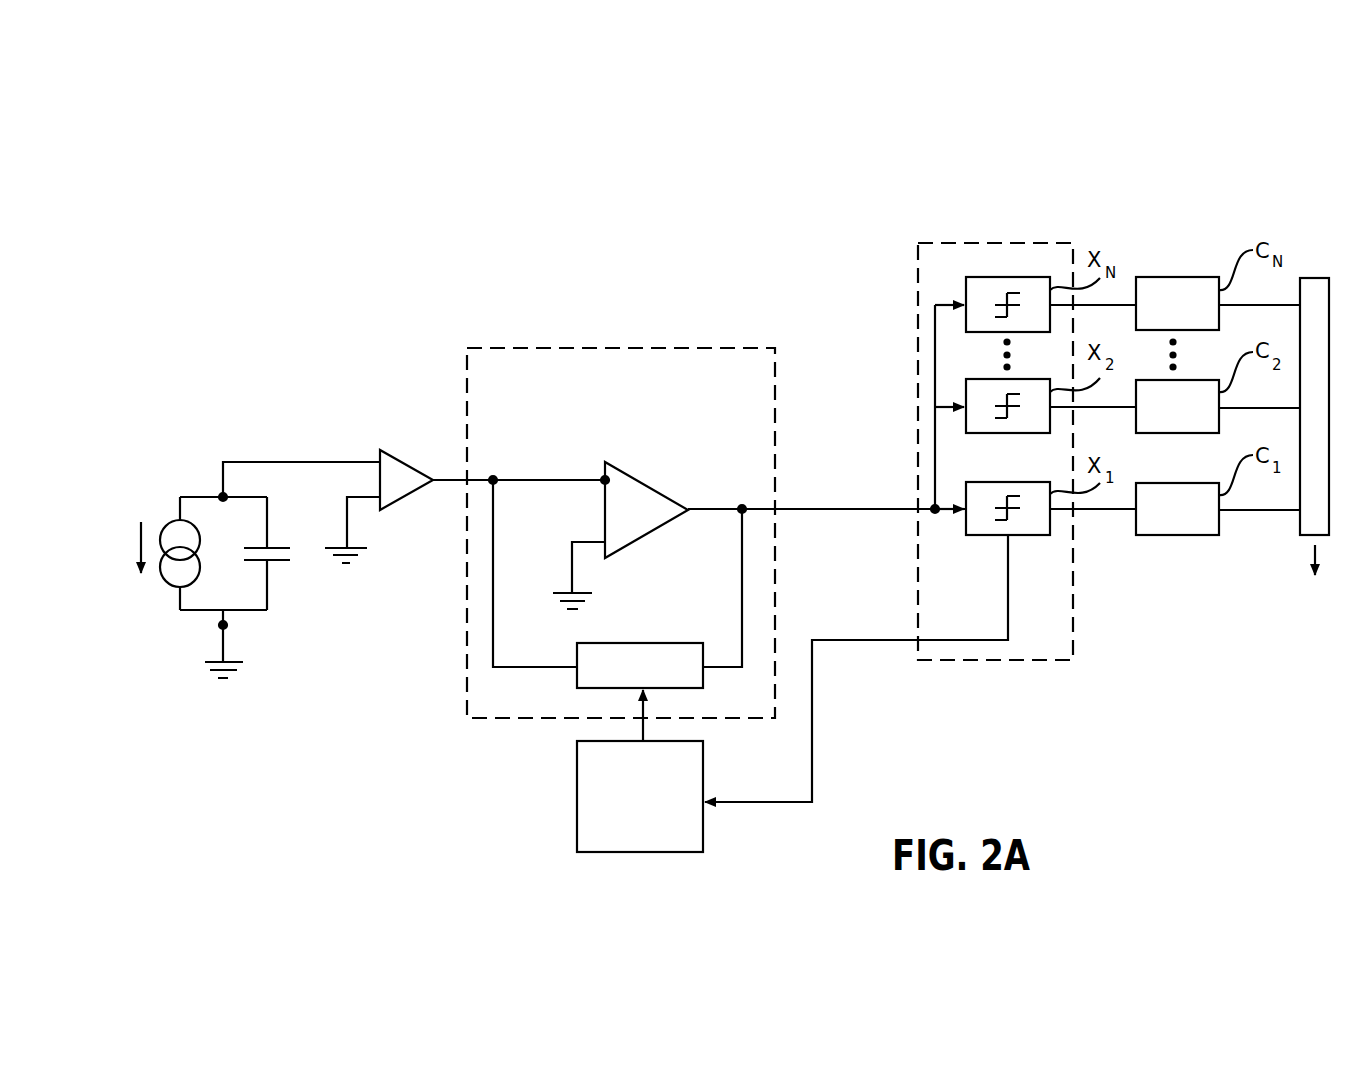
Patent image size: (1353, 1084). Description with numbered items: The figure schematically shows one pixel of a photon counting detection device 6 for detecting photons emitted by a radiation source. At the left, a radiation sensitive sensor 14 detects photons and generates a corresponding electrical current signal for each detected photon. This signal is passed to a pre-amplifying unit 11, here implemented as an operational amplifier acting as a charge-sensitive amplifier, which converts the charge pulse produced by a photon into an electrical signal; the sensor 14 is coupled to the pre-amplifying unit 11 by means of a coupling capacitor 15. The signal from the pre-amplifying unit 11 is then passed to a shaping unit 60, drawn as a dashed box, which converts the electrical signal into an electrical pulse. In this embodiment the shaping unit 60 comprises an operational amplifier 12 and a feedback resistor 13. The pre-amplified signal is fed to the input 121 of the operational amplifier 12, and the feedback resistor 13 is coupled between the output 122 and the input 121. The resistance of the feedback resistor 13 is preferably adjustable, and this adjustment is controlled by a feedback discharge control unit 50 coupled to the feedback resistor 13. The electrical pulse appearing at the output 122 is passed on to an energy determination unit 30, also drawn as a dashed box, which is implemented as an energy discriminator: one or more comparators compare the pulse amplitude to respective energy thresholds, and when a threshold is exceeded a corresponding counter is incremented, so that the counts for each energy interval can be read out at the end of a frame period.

The detection device 6 is at (677, 258).
The shaping unit 60 is at (484, 340).
The radiation sensitive sensor 14 is at (176, 468).
The coupling capacitor 15 is at (281, 576).
The pre-amplifying unit 11 is at (399, 465).
The operational amplifier 12 is at (638, 500).
The input 121 is at (603, 477).
The output 122 is at (745, 507).
The feedback resistor 13 is at (585, 680).
The feedback discharge control unit 50 is at (590, 802).
The energy determination unit 30 is at (917, 373).